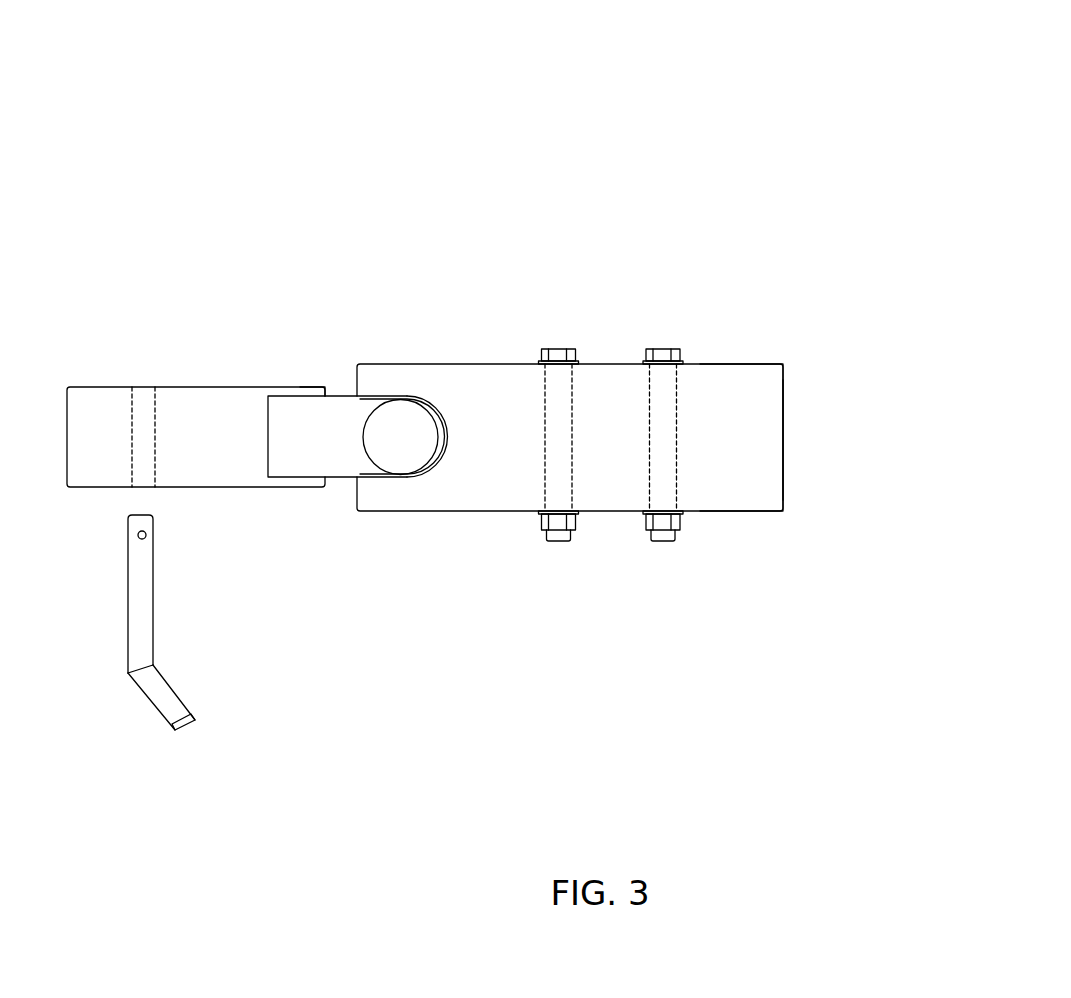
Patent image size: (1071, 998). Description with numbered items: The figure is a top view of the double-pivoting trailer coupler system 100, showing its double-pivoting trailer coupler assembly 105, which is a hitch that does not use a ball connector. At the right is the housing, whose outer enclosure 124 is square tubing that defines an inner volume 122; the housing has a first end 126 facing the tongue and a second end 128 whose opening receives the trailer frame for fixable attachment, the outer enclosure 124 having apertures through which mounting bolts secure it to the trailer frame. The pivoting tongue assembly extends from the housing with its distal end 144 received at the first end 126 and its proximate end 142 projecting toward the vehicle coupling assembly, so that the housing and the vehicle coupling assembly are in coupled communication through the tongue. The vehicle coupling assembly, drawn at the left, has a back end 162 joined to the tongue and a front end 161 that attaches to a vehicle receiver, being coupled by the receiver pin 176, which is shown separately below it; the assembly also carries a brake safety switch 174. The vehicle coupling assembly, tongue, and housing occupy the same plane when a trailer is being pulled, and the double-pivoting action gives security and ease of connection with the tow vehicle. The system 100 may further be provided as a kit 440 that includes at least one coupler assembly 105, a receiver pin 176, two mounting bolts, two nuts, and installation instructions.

The double-pivoting trailer coupler system 100 is at (552, 50).
The kit 440 is at (575, 75).
The double-pivoting trailer coupler assembly 105 is at (601, 105).
The inner volume 122 is at (798, 423).
The outer enclosure 124 is at (479, 523).
The first end 126 is at (350, 502).
The second end 128 is at (753, 496).
The proximate end 142 is at (259, 454).
The distal end 144 is at (452, 414).
The front end 161 is at (53, 402).
The back end 162 is at (330, 377).
The brake safety switch 174 is at (123, 377).
The receiver pin 176 is at (169, 586).